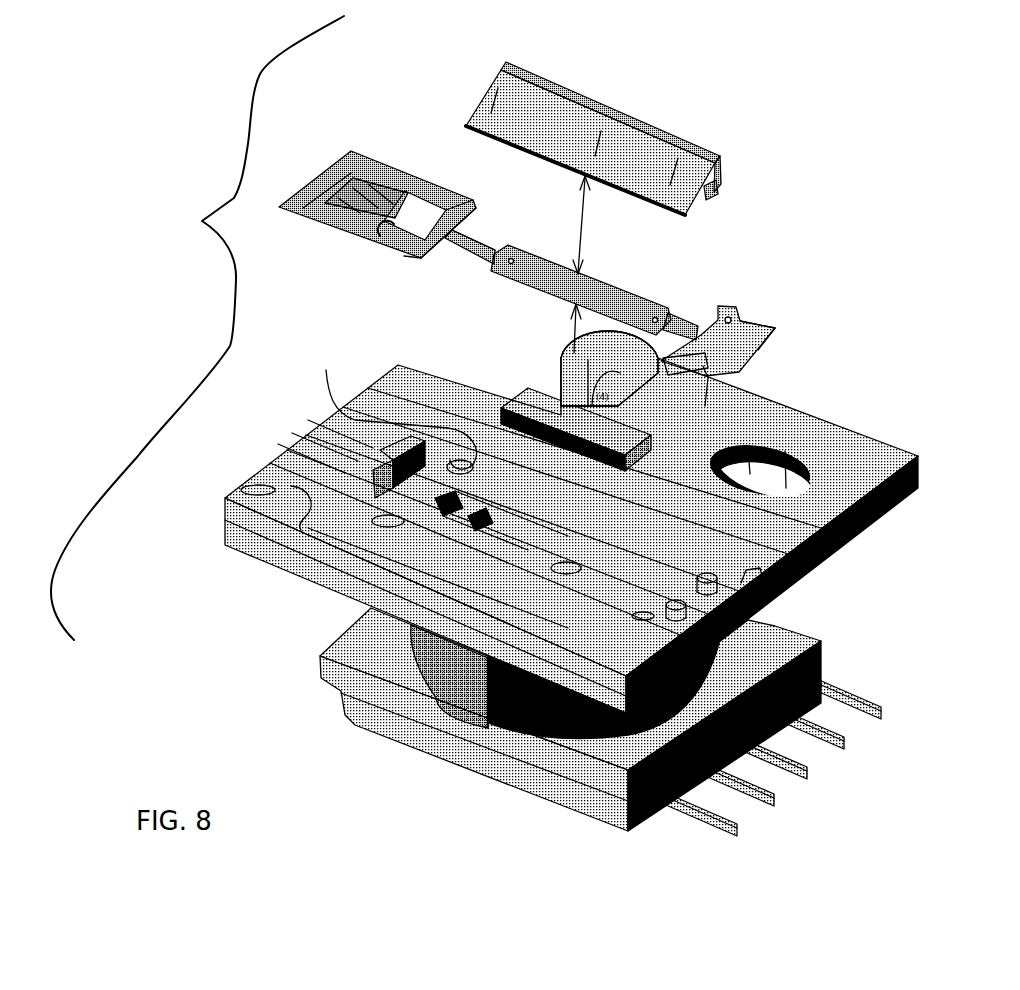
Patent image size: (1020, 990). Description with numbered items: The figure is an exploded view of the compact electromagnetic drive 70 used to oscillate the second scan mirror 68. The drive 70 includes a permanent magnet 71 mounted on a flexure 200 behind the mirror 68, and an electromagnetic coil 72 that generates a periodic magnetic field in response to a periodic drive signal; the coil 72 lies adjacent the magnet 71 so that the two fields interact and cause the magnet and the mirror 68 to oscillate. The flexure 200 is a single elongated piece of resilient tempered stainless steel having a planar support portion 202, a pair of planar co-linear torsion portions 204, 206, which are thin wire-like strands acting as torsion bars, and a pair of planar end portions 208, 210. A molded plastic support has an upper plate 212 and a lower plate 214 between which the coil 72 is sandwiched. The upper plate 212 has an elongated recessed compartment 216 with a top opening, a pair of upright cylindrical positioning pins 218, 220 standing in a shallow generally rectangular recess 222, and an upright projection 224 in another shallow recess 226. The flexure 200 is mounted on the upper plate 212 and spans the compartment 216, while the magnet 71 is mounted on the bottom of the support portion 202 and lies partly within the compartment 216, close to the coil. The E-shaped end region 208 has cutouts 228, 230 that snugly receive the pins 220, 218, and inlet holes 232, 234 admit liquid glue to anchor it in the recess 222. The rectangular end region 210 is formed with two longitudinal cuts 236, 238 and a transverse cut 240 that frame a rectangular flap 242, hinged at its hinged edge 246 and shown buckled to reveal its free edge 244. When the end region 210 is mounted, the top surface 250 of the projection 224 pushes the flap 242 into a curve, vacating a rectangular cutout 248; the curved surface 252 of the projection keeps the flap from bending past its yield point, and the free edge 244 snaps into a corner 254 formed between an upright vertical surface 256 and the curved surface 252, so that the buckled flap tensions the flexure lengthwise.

The second scan mirror 68 is at (483, 102).
The electromagnetic drive 70 is at (600, 764).
The permanent magnet 71 is at (517, 397).
The electromagnetic coil 72 is at (450, 682).
The flexure 200 is at (557, 238).
The planar support portion 202 is at (608, 280).
The planar torsion portion 204 is at (754, 315).
The planar torsion portion 206 is at (457, 222).
The planar end portion 208 is at (772, 310).
The planar end portion 210 is at (390, 236).
The upper plate 212 is at (810, 408).
The lower plate 214 is at (588, 800).
The elongated recessed compartment 216 is at (563, 527).
The positioning pin 218 is at (640, 604).
The positioning pin 220 is at (700, 568).
The shallow generally rectangular recess 222 is at (733, 560).
The upright projection 224 is at (383, 374).
The shallow recess 226 is at (440, 418).
The cutout 228 is at (717, 310).
The cutout 230 is at (683, 338).
The inlet hole 232 is at (743, 330).
The inlet hole 234 is at (710, 398).
The longitudinal cut 236 is at (427, 193).
The longitudinal cut 238 is at (394, 236).
The transverse cut 240 is at (413, 227).
The rectangular flap 242 is at (382, 180).
The free edge 244 is at (403, 190).
The hinged edge 246 is at (327, 183).
The rectangular cutout 248 is at (380, 215).
The top surface 250 is at (288, 537).
The curved surface 252 is at (267, 445).
The corner 254 is at (377, 473).
The upright vertical surface 256 is at (360, 443).